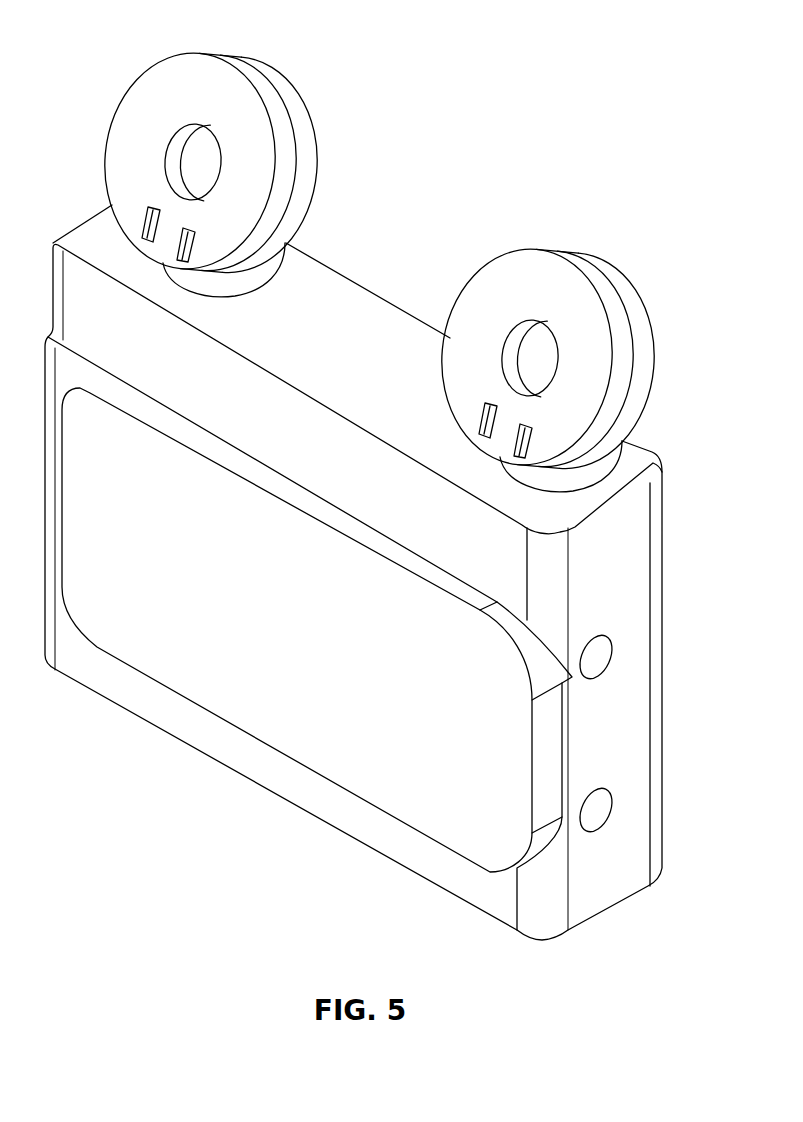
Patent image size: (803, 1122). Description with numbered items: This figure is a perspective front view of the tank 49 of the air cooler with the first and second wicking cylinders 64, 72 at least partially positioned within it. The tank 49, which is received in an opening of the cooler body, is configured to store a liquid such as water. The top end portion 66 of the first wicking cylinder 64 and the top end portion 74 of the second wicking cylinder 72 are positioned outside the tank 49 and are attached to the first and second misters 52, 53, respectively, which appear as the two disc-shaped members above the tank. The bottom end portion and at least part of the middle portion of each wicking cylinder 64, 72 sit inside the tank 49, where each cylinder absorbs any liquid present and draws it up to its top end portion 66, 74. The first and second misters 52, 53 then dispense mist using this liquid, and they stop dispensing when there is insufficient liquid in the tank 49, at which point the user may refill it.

The tank 49 is at (637, 787).
The first mister 52 is at (122, 110).
The second mister 53 is at (472, 285).
The first wicking cylinder 64 is at (280, 258).
The top end portion 66 is at (292, 100).
The second wicking cylinder 72 is at (613, 457).
The top end portion 74 is at (638, 298).